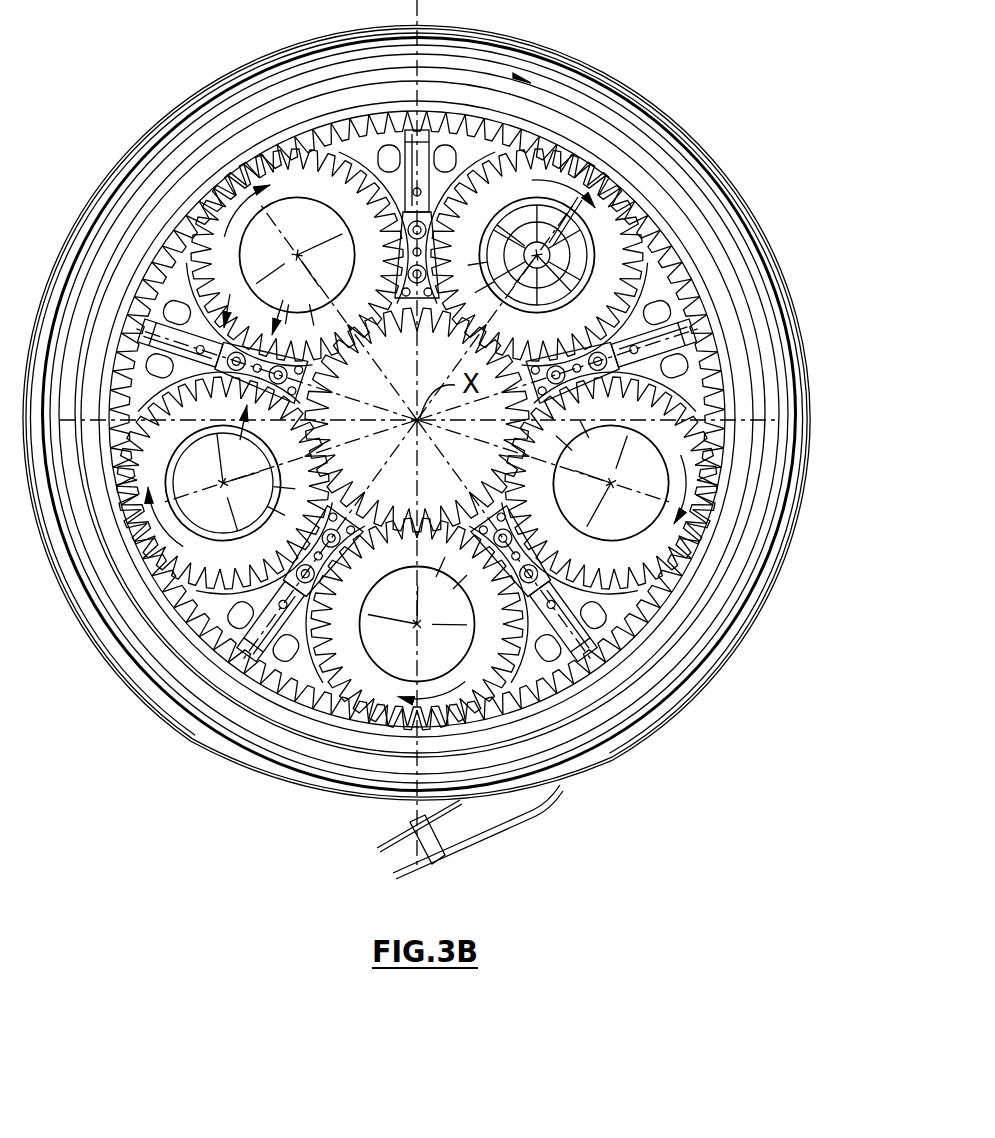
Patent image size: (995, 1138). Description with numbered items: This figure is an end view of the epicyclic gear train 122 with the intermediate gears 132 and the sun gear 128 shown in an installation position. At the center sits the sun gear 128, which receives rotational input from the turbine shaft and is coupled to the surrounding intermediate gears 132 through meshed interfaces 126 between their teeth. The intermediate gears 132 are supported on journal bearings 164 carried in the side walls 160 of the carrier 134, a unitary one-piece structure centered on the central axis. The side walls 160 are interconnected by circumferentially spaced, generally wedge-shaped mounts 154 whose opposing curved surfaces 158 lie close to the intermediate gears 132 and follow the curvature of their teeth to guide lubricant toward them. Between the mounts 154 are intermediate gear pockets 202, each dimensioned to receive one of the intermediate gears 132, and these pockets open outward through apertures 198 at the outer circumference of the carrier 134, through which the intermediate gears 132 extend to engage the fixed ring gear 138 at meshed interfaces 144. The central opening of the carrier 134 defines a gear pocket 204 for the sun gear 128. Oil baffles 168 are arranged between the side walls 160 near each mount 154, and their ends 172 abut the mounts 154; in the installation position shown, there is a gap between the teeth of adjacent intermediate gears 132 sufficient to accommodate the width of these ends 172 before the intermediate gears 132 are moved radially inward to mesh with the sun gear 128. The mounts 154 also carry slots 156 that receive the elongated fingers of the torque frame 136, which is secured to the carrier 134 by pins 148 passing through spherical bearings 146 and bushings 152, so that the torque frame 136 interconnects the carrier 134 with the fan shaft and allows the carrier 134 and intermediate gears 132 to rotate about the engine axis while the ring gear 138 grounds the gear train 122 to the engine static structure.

The epicyclic gear train 122 is at (762, 112).
The gear pocket 204 is at (507, 200).
The ring gear 138 is at (552, 147).
The intermediate gear pockets 202 is at (672, 417).
The meshed interfaces 144 is at (718, 464).
The intermediate gears 132 is at (682, 505).
The apertures 198 is at (660, 588).
The torque frame 136 is at (665, 680).
The pins 148 is at (655, 705).
The spherical bearings 146 is at (598, 755).
The side walls 160 is at (490, 745).
The carrier 134 is at (333, 707).
The curved surfaces 158 is at (225, 592).
The slots 156 is at (265, 668).
The mounts 154 is at (228, 642).
The oil baffles 168 is at (417, 411).
The journal bearings 164 is at (297, 247).
The sun gear 128 is at (467, 501).
The meshed interfaces 126 is at (417, 439).
The bushings 152 is at (555, 605).
The ends 172 is at (168, 470).